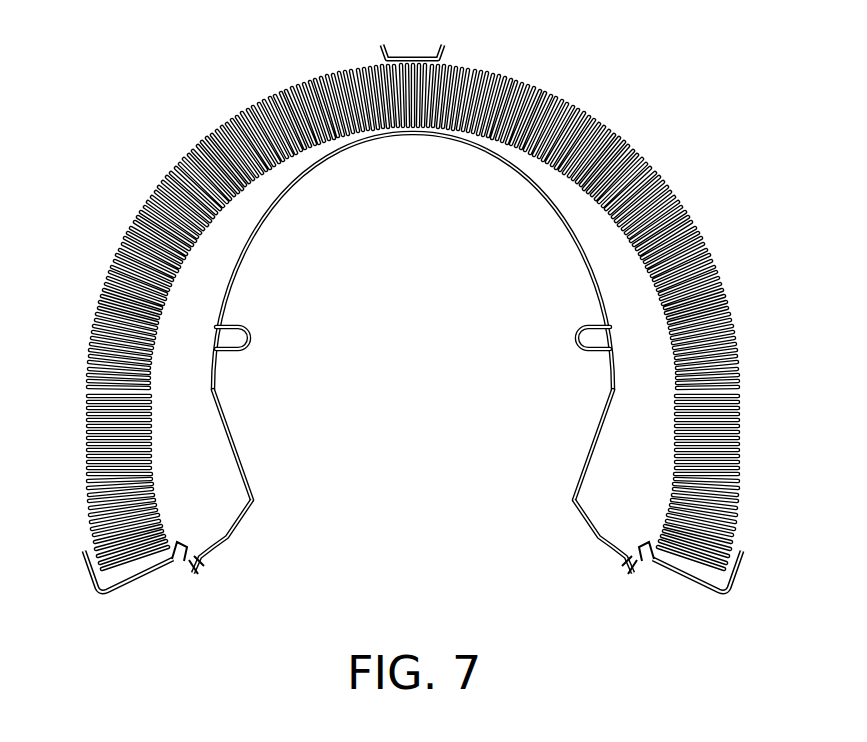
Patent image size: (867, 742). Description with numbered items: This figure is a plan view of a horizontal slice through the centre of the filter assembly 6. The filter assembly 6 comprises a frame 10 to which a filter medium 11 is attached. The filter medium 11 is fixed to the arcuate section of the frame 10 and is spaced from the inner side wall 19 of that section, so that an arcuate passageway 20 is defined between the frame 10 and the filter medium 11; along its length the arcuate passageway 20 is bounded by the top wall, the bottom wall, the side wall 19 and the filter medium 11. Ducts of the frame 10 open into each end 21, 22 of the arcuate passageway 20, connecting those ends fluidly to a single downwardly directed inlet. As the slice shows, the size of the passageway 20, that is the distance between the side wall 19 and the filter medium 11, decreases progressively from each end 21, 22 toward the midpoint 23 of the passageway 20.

The filter assembly 6 is at (142, 118).
The frame 10 is at (130, 591).
The filter medium 11 is at (87, 401).
The inner side wall 19 is at (243, 232).
The arcuate passageway 20 is at (193, 406).
The end of the arcuate passageway 21 is at (218, 518).
The end of the arcuate passageway 22 is at (609, 518).
The midpoint of the passageway 23 is at (413, 136).